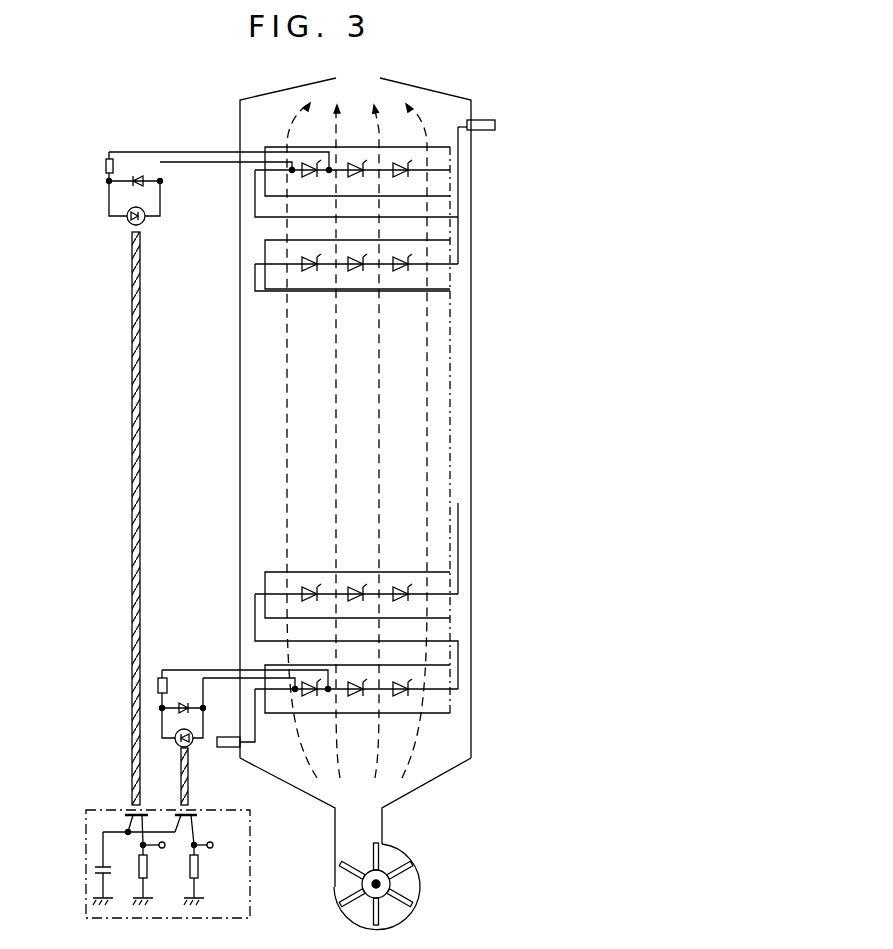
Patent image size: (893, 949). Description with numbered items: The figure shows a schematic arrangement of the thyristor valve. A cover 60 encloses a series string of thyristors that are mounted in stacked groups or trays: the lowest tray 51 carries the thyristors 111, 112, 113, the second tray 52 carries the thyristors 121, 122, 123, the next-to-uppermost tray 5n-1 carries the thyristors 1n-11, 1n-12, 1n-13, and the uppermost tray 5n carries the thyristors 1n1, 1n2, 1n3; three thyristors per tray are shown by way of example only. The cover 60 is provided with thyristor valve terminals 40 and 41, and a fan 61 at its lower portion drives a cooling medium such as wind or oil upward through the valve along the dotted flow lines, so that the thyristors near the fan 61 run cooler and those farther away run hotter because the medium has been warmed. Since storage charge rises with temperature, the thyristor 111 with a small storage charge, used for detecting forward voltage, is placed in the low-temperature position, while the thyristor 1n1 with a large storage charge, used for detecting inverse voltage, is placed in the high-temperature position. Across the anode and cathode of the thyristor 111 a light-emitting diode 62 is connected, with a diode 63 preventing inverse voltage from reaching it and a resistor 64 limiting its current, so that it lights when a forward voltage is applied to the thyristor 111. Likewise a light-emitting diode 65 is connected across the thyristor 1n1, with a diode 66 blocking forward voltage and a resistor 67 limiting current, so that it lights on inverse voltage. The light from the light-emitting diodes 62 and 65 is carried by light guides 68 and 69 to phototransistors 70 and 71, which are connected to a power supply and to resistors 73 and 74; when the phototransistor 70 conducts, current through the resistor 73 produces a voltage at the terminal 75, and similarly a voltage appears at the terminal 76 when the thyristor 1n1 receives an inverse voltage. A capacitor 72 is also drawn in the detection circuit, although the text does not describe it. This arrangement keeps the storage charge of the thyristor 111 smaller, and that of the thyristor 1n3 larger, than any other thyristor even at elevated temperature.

The cover 60 is at (471, 418).
The fan 61 is at (398, 855).
The thyristor valve terminal 41 is at (495, 127).
The thyristor valve terminal 40 is at (227, 748).
The tray 5n is at (440, 195).
The tray 5n-1 is at (440, 277).
The tray 52 is at (442, 609).
The tray 51 is at (442, 708).
The thyristor 1n1 is at (300, 177).
The thyristor 1n2 is at (353, 180).
The thyristor 1n3 is at (408, 177).
The thyristor 1n-11 is at (312, 278).
The thyristor 1n-12 is at (353, 257).
The thyristor 1n-13 is at (400, 258).
The thyristor 111 is at (311, 697).
The thyristor 112 is at (357, 697).
The thyristor 113 is at (404, 697).
The thyristor 121 is at (310, 587).
The thyristor 122 is at (357, 587).
The thyristor 123 is at (404, 587).
The resistor 67 is at (106, 160).
The diode 66 is at (138, 186).
The light-emitting diode 65 is at (128, 224).
The light guide 69 is at (131, 684).
The resistor 64 is at (158, 678).
The diode 63 is at (183, 705).
The light-emitting diode 62 is at (178, 748).
The light guide 68 is at (182, 784).
The phototransistor 70 is at (195, 820).
The phototransistor 71 is at (128, 815).
The capacitor 72 is at (97, 872).
The resistor 73 is at (199, 872).
The resistor 74 is at (148, 872).
The terminal 75 is at (213, 845).
The terminal 76 is at (165, 846).